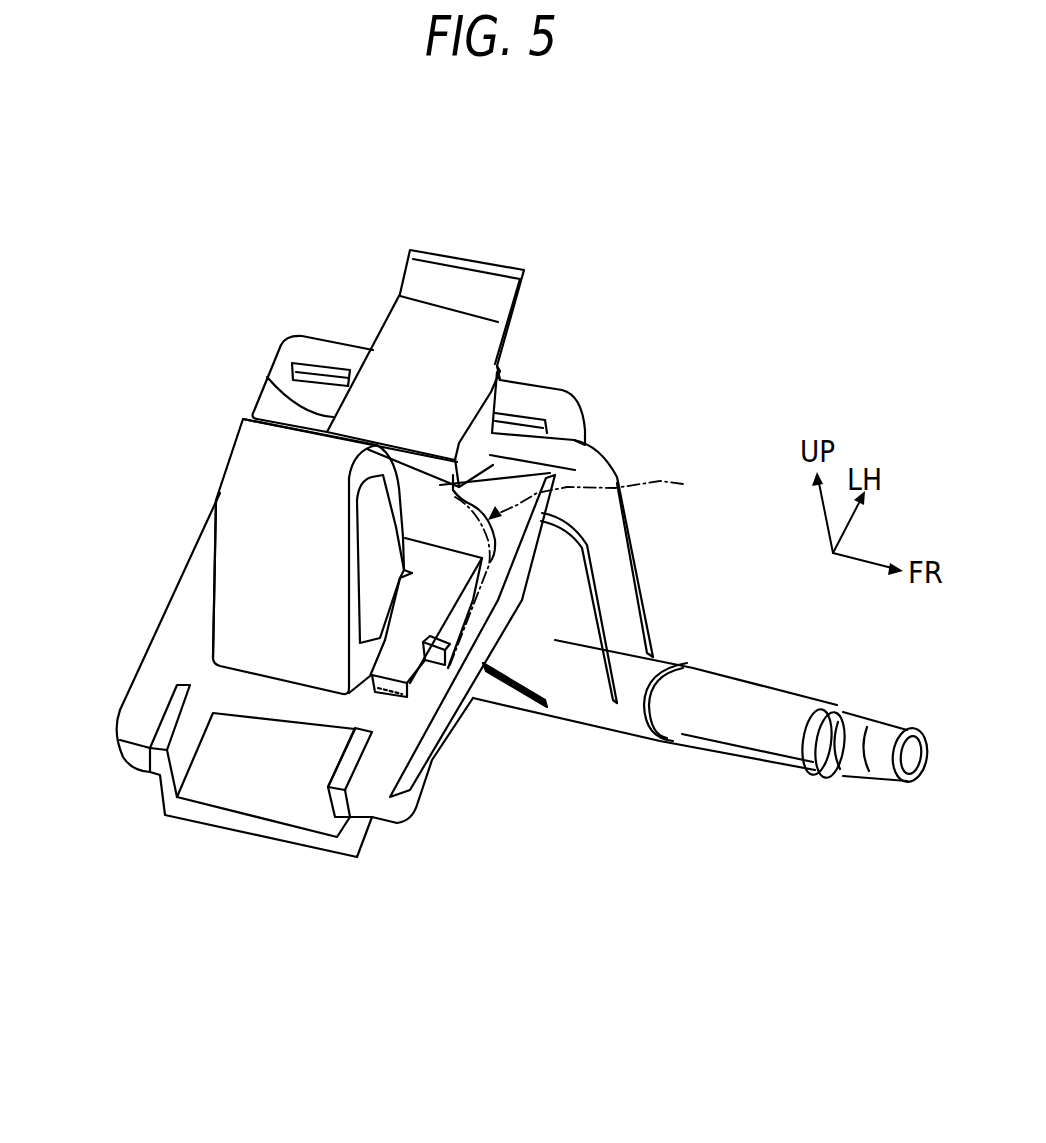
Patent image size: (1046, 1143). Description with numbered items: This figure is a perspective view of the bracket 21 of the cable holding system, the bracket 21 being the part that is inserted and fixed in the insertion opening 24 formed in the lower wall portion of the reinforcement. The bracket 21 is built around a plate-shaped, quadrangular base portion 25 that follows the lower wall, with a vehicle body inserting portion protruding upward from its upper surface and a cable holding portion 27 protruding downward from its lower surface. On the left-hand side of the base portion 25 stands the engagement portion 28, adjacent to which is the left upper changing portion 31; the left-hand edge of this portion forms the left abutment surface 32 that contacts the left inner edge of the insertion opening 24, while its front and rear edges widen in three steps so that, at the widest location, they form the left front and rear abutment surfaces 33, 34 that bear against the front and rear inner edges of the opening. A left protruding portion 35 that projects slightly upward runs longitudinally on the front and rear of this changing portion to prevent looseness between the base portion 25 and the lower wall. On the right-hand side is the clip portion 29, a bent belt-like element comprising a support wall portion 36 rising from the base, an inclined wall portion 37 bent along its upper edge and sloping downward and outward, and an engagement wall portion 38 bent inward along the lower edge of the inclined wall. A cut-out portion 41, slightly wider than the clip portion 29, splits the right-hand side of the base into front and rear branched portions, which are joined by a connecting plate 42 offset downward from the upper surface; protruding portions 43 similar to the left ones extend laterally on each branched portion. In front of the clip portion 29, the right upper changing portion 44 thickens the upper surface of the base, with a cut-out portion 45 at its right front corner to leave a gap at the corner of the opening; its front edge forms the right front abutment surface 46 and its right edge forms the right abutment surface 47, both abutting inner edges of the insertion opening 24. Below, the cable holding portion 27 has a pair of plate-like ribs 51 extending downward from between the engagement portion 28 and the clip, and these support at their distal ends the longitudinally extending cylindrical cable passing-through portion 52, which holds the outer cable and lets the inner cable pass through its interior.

The bracket 21 is at (710, 257).
The insertion opening 24 is at (583, 561).
The base portion 25 is at (558, 378).
The cable holding portion 27 is at (660, 613).
The engagement portion 28 is at (472, 240).
The clip portion 29 is at (222, 428).
The left upper changing portion 31 is at (352, 352).
The left abutment surface 32 is at (500, 370).
The left front abutment surface 33 is at (548, 470).
The left rear abutment surface 34 is at (325, 413).
The left protruding portion 35 is at (303, 370).
The support wall portion 36 is at (400, 493).
The inclined wall portion 37 is at (223, 558).
The engagement wall portion 38 is at (367, 603).
The cut-out portion 41 is at (180, 757).
The connecting plate 42 is at (287, 797).
The protruding portions 43 is at (165, 727).
The right upper changing portion 44 is at (450, 680).
The cut-out portion 45 is at (425, 675).
The right front abutment surface 46 is at (518, 645).
The right abutment surface 47 is at (390, 672).
The ribs 51 is at (637, 560).
The cable passing-through portion 52 is at (758, 735).